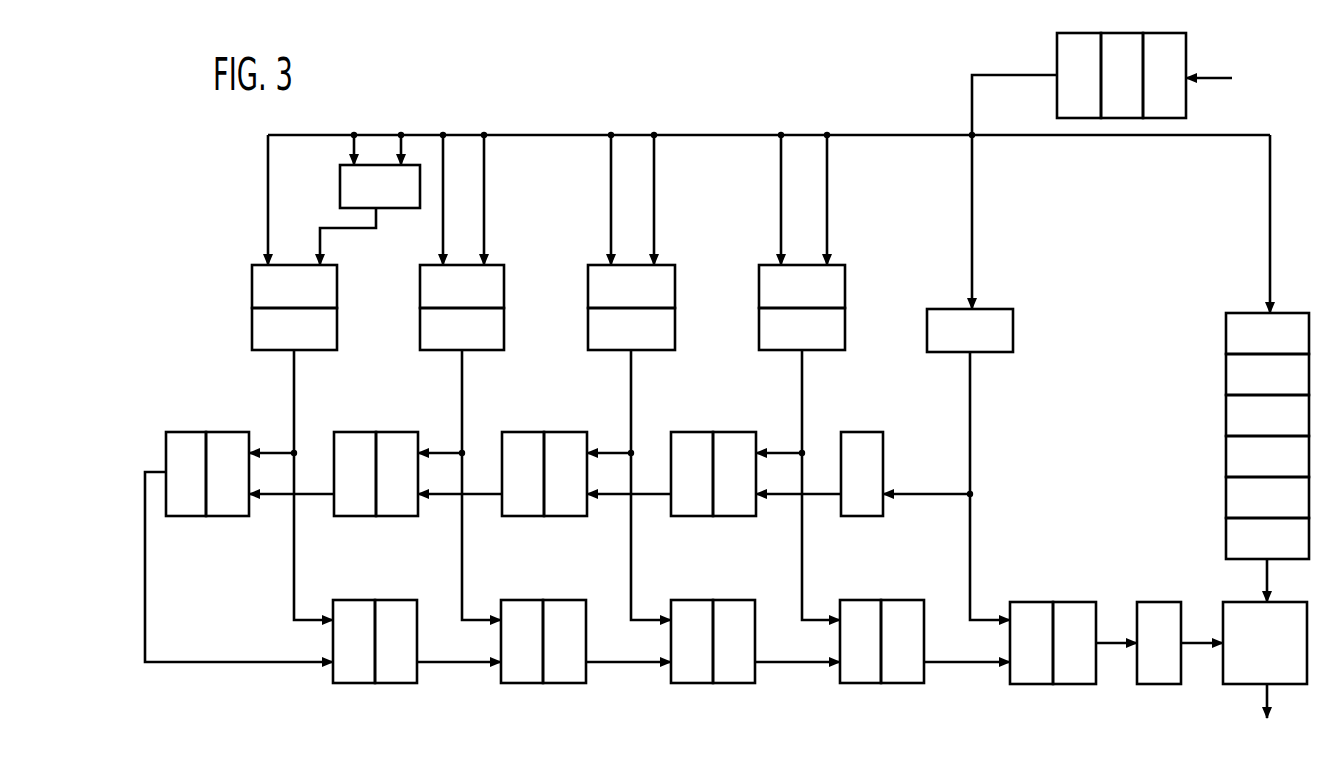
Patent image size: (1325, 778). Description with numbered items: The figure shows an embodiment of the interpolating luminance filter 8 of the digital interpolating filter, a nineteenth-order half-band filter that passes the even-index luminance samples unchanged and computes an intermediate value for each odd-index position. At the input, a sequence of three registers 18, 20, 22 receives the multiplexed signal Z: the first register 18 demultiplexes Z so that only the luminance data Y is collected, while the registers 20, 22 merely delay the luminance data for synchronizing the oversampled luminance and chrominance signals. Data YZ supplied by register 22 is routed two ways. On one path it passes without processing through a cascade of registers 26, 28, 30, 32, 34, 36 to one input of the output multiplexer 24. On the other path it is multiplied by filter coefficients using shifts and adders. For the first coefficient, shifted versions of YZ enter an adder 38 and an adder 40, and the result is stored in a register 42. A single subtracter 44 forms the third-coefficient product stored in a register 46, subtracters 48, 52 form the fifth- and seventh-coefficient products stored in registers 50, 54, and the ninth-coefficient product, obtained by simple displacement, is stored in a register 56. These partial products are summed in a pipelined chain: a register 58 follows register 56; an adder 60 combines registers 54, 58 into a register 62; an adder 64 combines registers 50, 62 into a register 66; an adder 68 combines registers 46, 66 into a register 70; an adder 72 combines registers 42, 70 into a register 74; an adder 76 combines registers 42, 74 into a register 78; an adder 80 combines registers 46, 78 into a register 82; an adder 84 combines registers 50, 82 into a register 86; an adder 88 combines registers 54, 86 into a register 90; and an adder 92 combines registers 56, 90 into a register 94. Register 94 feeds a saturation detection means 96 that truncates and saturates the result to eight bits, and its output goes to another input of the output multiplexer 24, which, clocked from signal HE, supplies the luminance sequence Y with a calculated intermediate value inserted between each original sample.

The interpolating luminance filter 8 is at (562, 72).
The first register 18 is at (1168, 40).
The register 20 is at (1128, 40).
The register 22 is at (1083, 40).
The output multiplexer 24 is at (1252, 657).
The register 26 is at (1228, 336).
The register 28 is at (1228, 378).
The register 30 is at (1233, 420).
The register 32 is at (1230, 462).
The register 34 is at (1232, 506).
The register 36 is at (1232, 546).
The adder 38 is at (343, 196).
The adder 40 is at (252, 291).
The register 42 is at (252, 333).
The subtracter 44 is at (420, 293).
The register 46 is at (420, 333).
The subtracter 48 is at (588, 291).
The register 50 is at (588, 331).
The subtracter 52 is at (759, 293).
The register 54 is at (759, 333).
The register 56 is at (927, 331).
The register 58 is at (864, 437).
The adder 60 is at (740, 437).
The register 62 is at (697, 437).
The adder 64 is at (570, 437).
The register 66 is at (528, 437).
The adder 68 is at (402, 437).
The register 70 is at (359, 437).
The adder 72 is at (235, 437).
The register 74 is at (192, 437).
The adder 76 is at (357, 604).
The register 78 is at (402, 604).
The adder 80 is at (526, 604).
The register 82 is at (569, 604).
The adder 84 is at (695, 604).
The register 86 is at (739, 604).
The adder 88 is at (864, 604).
The register 90 is at (907, 604).
The adder 92 is at (1047, 604).
The register 94 is at (1078, 604).
The saturation detection means 96 is at (1162, 608).